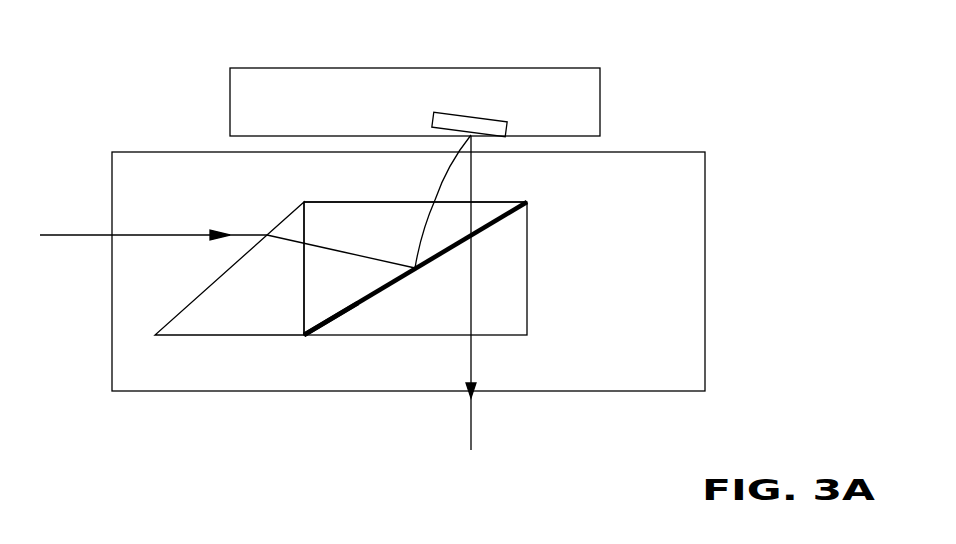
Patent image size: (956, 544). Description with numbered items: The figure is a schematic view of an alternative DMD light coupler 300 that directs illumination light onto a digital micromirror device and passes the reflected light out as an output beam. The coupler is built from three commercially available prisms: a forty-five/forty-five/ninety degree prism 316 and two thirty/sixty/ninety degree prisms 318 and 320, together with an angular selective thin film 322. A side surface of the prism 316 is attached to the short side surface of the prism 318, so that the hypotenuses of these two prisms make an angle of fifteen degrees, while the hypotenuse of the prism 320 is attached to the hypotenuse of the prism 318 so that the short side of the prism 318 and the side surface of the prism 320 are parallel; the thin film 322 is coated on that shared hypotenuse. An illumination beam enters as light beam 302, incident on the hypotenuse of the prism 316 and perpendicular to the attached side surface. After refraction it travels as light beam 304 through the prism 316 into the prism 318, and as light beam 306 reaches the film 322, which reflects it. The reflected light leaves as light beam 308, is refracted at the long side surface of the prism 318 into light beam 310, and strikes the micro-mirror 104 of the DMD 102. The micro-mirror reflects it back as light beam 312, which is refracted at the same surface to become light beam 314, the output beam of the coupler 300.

The DMD 102 is at (600, 68).
The micro-mirror 104 is at (452, 113).
The DMD light coupler 300 is at (705, 167).
The light beam 302 is at (60, 236).
The light beam 304 is at (268, 238).
The light beam 306 is at (346, 252).
The light beam 308 is at (428, 234).
The light beam 310 is at (443, 182).
The light beam 312 is at (472, 178).
The light beam 314 is at (470, 420).
The 45-45-90 degree prism 316 is at (222, 265).
The 30-60-90 degree prism 318 is at (340, 200).
The 30-60-90 degree prism 320 is at (527, 335).
The angular selective thin film 322 is at (358, 305).